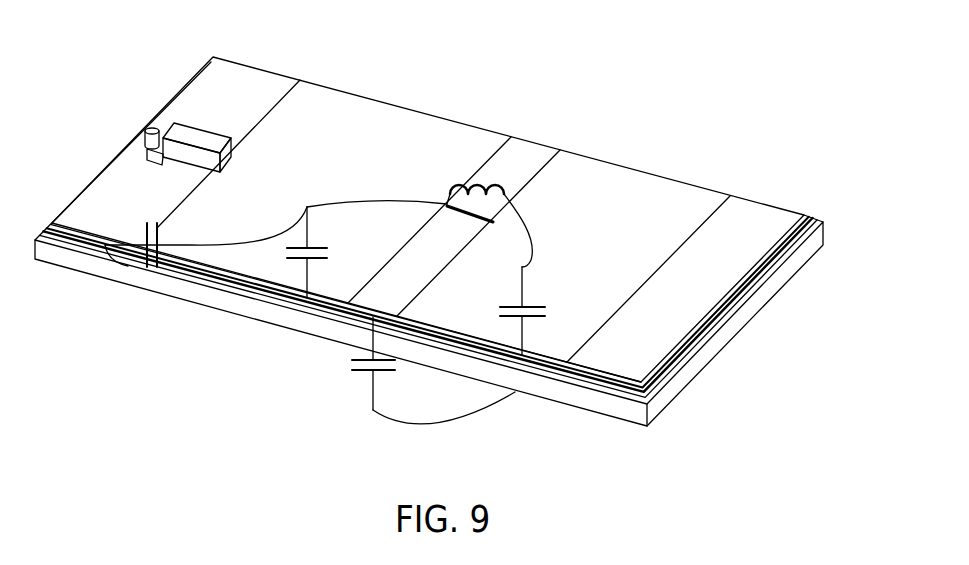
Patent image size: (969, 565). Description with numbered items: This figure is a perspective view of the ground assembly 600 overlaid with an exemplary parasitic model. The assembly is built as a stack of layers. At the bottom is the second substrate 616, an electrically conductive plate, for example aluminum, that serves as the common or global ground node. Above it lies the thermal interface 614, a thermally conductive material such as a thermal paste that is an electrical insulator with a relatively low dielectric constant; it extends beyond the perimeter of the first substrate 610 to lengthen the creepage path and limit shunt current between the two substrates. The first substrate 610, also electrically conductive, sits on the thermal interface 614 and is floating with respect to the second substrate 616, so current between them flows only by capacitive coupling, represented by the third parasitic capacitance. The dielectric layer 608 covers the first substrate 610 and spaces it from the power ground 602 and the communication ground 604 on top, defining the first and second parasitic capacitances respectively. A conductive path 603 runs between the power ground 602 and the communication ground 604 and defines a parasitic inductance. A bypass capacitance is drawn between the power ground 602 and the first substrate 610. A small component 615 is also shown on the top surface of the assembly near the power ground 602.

The ground assembly 600 is at (146, 56).
The power ground 602 is at (385, 118).
The conductive path 603 is at (477, 222).
The communication ground 604 is at (622, 185).
The dielectric layer 608 is at (668, 358).
The first substrate 610 is at (812, 217).
The thermal interface 614 is at (190, 135).
The cylindrical component 615 is at (151, 128).
The second substrate 616 is at (617, 413).